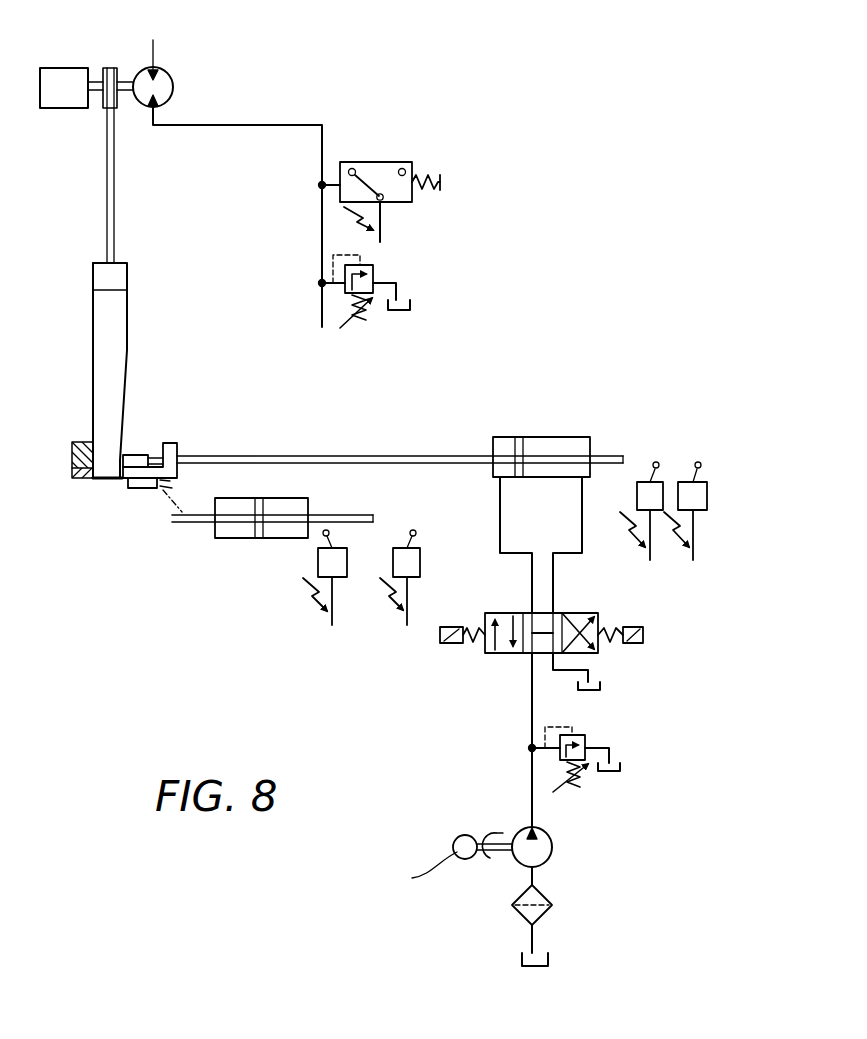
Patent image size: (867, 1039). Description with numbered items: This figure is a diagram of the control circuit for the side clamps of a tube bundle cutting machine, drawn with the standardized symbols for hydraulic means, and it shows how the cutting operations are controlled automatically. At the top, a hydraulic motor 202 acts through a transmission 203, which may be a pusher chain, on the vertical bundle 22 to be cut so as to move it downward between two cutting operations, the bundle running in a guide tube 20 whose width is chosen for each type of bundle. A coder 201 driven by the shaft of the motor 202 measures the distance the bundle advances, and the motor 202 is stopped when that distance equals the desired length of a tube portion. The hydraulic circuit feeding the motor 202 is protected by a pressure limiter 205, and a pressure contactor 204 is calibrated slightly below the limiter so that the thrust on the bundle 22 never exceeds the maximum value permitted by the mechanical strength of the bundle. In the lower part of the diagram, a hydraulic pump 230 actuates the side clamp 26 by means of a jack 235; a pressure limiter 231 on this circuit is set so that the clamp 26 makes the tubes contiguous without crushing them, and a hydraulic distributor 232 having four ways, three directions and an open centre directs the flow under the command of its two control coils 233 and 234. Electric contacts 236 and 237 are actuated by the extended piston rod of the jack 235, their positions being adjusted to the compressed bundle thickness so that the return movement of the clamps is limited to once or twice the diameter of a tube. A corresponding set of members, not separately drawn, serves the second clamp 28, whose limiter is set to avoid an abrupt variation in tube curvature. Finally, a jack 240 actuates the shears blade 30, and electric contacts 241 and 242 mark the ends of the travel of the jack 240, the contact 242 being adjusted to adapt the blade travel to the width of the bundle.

The coder 201 is at (55, 82).
The hydraulic motor 202 is at (165, 82).
The transmission 203 is at (107, 203).
The pressure contactor 204 is at (386, 165).
The pressure limiter 205 is at (375, 270).
The guide tube 20 is at (78, 445).
The bundle 22 is at (110, 320).
The clamp 26 is at (118, 468).
The clamp 28 is at (143, 460).
The shears blade 30 is at (140, 488).
The jack 240 is at (235, 537).
The electric contact 241 is at (325, 563).
The electric contact 242 is at (410, 563).
The jack 235 is at (540, 445).
The electric contact 236 is at (645, 488).
The electric contact 237 is at (698, 508).
The hydraulic distributor 232 is at (505, 655).
The control coil 233 is at (440, 634).
The control coil 234 is at (636, 644).
The pressure limiter 231 is at (587, 740).
The hydraulic pump 230 is at (548, 852).